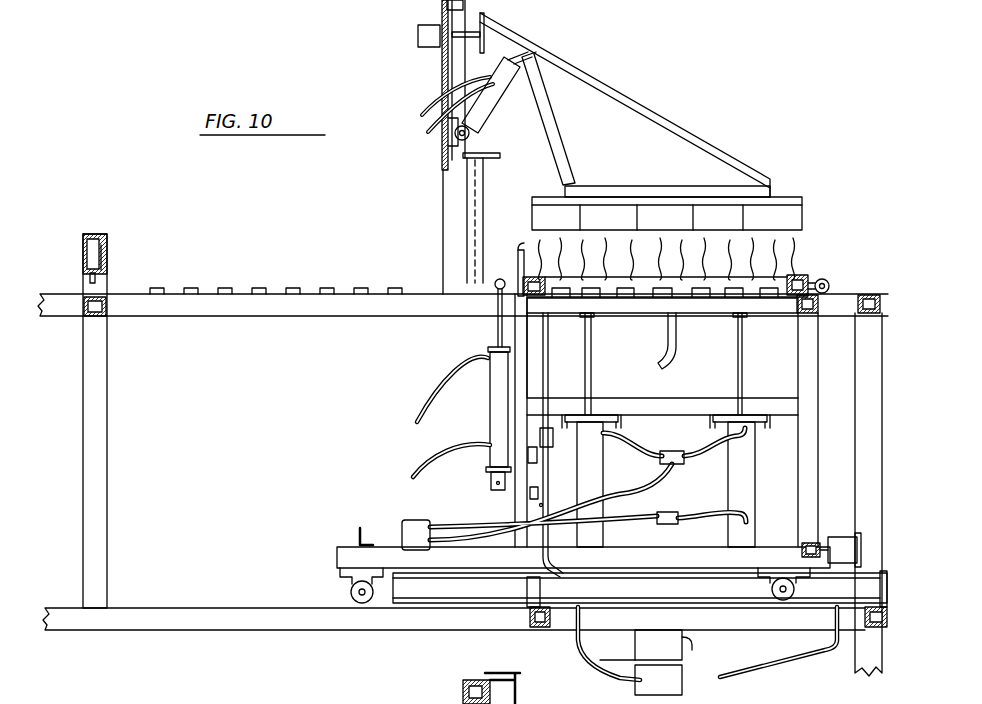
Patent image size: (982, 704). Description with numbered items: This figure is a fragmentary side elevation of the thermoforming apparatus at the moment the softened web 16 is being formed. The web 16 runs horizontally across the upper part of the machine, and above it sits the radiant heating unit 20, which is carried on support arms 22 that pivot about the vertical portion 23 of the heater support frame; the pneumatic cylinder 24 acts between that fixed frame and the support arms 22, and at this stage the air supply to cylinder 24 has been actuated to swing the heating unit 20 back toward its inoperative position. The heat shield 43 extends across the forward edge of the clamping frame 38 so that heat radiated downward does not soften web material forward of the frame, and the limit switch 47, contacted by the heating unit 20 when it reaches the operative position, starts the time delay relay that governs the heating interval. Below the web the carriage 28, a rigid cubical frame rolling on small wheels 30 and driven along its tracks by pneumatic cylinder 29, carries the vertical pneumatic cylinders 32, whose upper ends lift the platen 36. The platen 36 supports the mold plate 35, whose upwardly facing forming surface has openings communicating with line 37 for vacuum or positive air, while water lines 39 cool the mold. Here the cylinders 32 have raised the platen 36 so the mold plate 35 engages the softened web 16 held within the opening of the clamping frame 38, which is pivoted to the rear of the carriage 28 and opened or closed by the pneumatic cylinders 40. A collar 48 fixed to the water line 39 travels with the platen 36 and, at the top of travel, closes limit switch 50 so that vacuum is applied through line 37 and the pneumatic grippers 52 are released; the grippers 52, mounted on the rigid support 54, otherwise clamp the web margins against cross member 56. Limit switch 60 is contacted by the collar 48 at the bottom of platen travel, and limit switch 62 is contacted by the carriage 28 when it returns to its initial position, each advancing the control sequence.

The web 16 is at (628, 290).
The radiant heating unit 20 is at (790, 212).
The support arms 22 is at (557, 155).
The vertical portion of heater support frame 23 is at (482, 200).
The pneumatic cylinder 24 is at (518, 100).
The carriage 28 is at (813, 440).
The pneumatic cylinder 29 is at (717, 590).
The wheels 30 is at (347, 590).
The pneumatic cylinders 32 is at (757, 490).
The mold plate 35 is at (673, 290).
The platen 36 is at (642, 303).
The line 37 is at (672, 330).
The clamping frame 38 is at (808, 282).
The water lines 39 is at (550, 333).
The pneumatic cylinders 40 is at (496, 370).
The heat shield 43 is at (522, 277).
The limit switch 47 is at (418, 34).
The collar 48 is at (553, 443).
The limit switch 50 is at (530, 455).
The pneumatic grippers 52 is at (97, 278).
The rigid support 54 is at (92, 232).
The cross member 56 is at (83, 306).
The limit switch 60 is at (530, 502).
The limit switch 62 is at (842, 543).